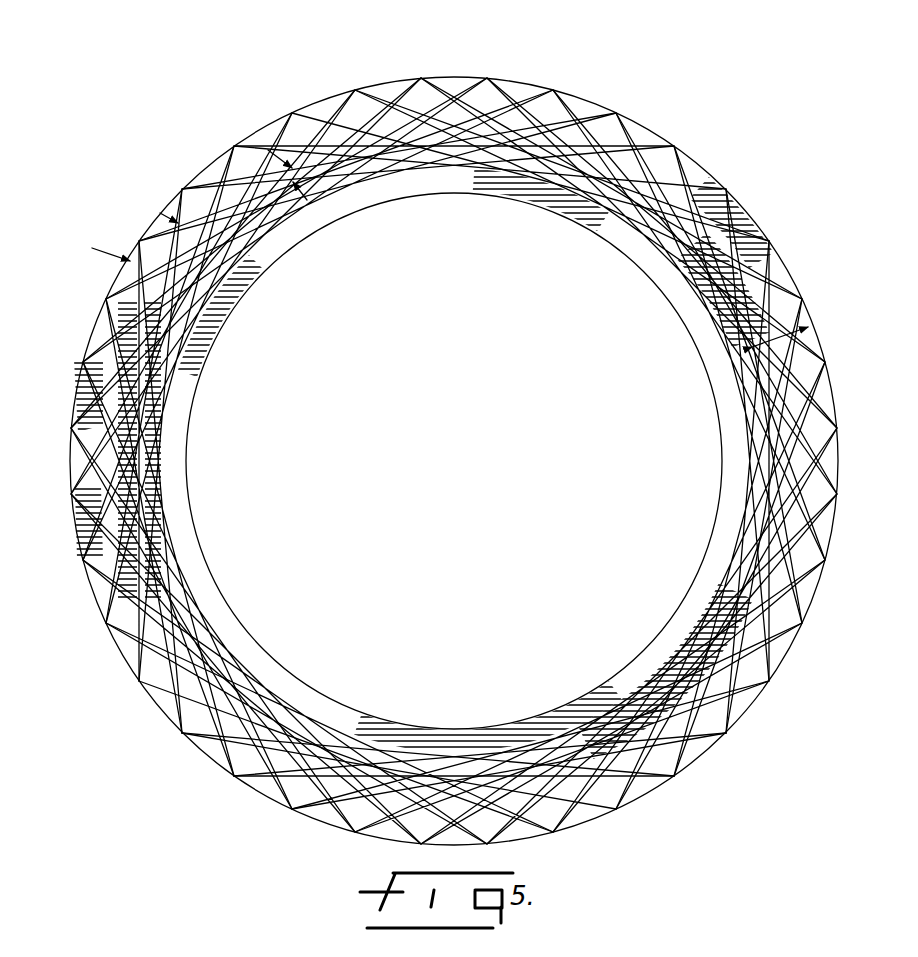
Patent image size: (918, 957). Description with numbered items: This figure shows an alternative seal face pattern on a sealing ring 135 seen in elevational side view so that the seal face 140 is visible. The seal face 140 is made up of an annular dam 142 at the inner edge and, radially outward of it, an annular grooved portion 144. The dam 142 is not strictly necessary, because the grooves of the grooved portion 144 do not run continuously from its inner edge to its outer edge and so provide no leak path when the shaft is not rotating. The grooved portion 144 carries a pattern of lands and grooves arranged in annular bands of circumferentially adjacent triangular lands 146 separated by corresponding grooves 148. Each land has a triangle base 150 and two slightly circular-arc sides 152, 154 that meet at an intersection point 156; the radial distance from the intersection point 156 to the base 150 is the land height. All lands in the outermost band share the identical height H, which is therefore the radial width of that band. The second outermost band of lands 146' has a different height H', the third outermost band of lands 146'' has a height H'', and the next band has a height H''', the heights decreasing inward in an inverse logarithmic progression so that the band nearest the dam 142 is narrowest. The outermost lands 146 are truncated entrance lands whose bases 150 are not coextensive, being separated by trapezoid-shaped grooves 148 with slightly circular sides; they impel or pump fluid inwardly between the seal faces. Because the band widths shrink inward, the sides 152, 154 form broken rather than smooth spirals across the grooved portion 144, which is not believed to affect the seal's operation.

The spring ring assembly 135 is at (283, 117).
The seal face 140 is at (707, 237).
The annular dam 142 is at (706, 553).
The grooved portion 144 is at (783, 323).
The lands 146 is at (437, 783).
The second outermost band of lands 146' is at (55, 409).
The third outermost band of lands 146'' is at (60, 513).
The grooves 148 is at (168, 698).
The triangle base 150 is at (208, 757).
The triangle side 152 is at (247, 780).
The triangle side 154 is at (170, 720).
The intersection point 156 is at (227, 737).
The height H is at (112, 240).
The height H' is at (164, 207).
The height H'' is at (247, 144).
The height H''' is at (342, 215).